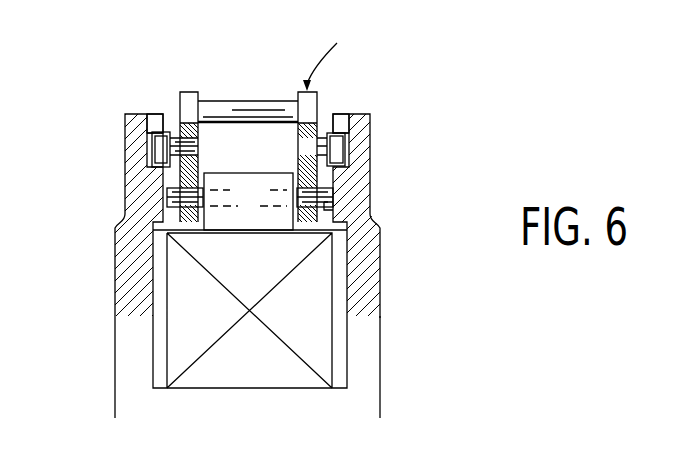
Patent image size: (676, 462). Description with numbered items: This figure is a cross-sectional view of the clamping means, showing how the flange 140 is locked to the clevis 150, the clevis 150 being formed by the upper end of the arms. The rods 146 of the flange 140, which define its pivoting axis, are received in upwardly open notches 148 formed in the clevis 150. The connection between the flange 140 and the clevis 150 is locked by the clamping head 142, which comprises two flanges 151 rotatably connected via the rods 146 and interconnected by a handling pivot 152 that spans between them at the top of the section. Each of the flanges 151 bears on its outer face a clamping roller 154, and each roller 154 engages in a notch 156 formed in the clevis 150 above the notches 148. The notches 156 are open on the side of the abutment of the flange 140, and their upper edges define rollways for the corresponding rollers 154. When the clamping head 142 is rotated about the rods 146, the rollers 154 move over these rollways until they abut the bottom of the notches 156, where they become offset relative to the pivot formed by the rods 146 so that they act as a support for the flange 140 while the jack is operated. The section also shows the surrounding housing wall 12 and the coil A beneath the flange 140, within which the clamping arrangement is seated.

The housing tube 12 is at (380, 388).
The flange 140 is at (220, 220).
The clamping head 142 is at (338, 58).
The rods 146 is at (175, 196).
The notches 148 is at (330, 205).
The clevis 150 is at (133, 292).
The flanges 151 is at (186, 100).
The handling pivot 152 is at (223, 106).
The clamping roller 154 is at (155, 150).
The notch 156 is at (157, 122).
The coil A is at (168, 362).